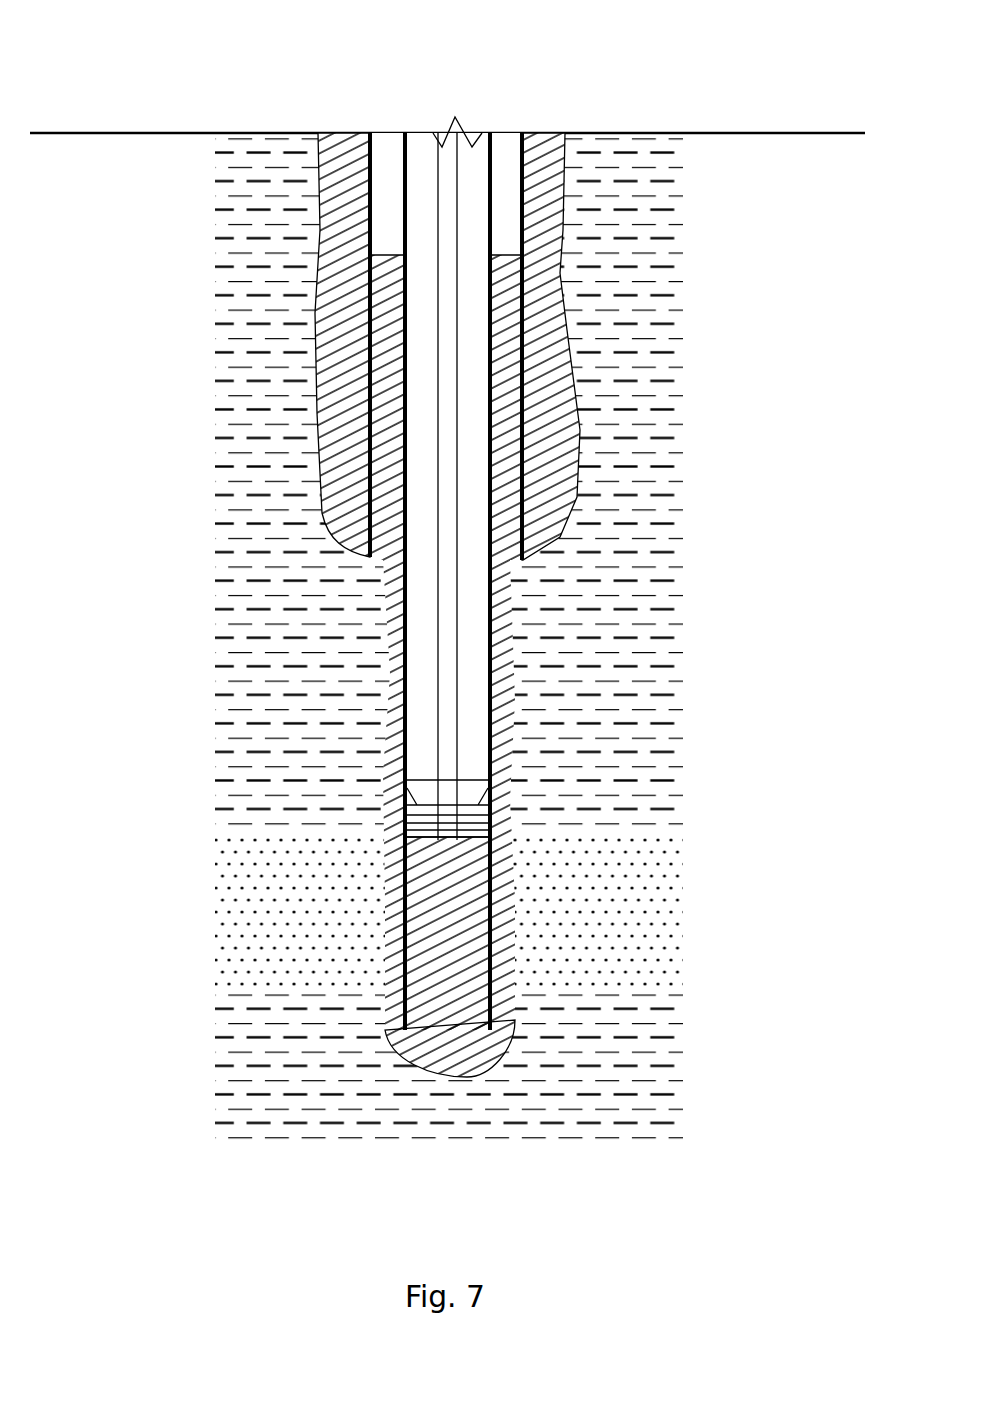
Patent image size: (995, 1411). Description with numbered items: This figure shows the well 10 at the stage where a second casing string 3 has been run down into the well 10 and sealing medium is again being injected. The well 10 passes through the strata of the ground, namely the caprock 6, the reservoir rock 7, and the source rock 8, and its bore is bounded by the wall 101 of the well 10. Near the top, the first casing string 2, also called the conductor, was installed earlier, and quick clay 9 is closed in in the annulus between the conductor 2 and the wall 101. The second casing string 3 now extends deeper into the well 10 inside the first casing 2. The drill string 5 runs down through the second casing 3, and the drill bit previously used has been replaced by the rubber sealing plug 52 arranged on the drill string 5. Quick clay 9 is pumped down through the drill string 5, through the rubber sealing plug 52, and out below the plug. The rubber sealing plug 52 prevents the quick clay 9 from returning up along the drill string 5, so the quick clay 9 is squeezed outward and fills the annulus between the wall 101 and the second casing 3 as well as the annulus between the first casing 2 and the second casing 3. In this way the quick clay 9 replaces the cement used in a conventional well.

The well 10 is at (471, 130).
The wall of the well 101 is at (330, 161).
The first casing string 2 is at (413, 202).
The drill string 5 is at (450, 218).
The second casing string 3 is at (485, 299).
The caprock 6 is at (560, 597).
The reservoir rock 7 is at (567, 948).
The source rock 8 is at (583, 1085).
The quick clay 9 is at (467, 889).
The rubber sealing plug 52 is at (427, 792).